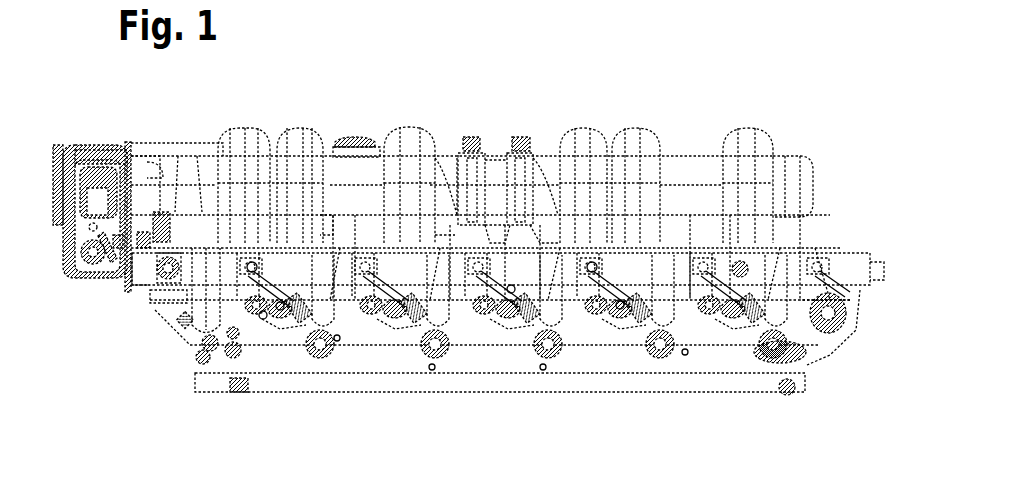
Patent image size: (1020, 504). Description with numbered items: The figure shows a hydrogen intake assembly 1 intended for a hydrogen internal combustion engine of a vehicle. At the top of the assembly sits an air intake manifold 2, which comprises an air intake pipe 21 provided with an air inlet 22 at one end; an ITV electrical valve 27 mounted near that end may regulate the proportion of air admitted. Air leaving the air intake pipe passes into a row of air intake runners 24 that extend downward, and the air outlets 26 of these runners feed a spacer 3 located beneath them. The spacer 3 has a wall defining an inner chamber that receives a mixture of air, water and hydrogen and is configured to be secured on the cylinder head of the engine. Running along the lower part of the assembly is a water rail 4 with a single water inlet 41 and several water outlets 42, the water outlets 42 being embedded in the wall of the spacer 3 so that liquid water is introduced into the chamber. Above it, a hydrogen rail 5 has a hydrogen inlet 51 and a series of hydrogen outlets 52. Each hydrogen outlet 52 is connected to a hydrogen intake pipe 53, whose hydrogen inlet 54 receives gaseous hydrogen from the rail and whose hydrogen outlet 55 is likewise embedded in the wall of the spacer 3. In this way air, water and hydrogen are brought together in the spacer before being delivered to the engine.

The hydrogen intake assembly 1 is at (818, 113).
The air intake manifold 2 is at (330, 116).
The spacer 3 is at (852, 336).
The water rail 4 is at (820, 383).
The hydrogen rail 5 is at (885, 256).
The air intake pipe 21 is at (813, 192).
The air inlet 22 is at (60, 192).
The air intake runners 24 is at (212, 272).
The air outlets 26 is at (337, 338).
The ITV electrical valve 27 is at (55, 162).
The water inlet 41 is at (195, 383).
The water outlets 42 is at (432, 367).
The hydrogen inlet 51 is at (128, 286).
The hydrogen outlets 52 is at (262, 262).
The hydrogen intake pipes 53 is at (280, 308).
The hydrogen inlets 54 is at (252, 264).
The hydrogen outlets 55 is at (263, 318).